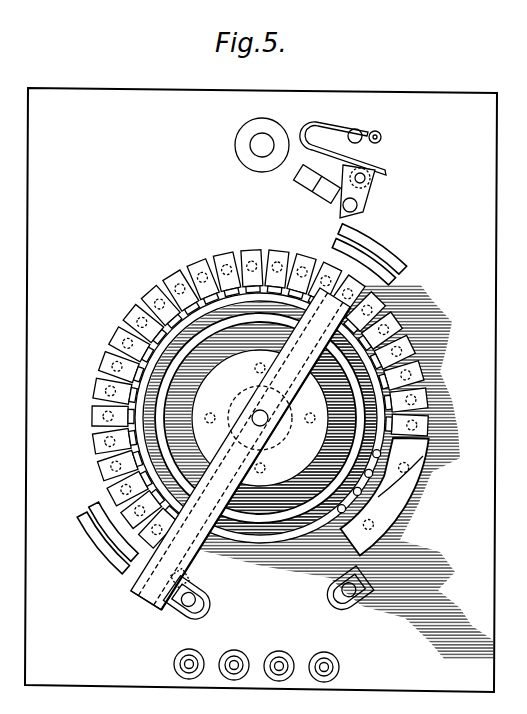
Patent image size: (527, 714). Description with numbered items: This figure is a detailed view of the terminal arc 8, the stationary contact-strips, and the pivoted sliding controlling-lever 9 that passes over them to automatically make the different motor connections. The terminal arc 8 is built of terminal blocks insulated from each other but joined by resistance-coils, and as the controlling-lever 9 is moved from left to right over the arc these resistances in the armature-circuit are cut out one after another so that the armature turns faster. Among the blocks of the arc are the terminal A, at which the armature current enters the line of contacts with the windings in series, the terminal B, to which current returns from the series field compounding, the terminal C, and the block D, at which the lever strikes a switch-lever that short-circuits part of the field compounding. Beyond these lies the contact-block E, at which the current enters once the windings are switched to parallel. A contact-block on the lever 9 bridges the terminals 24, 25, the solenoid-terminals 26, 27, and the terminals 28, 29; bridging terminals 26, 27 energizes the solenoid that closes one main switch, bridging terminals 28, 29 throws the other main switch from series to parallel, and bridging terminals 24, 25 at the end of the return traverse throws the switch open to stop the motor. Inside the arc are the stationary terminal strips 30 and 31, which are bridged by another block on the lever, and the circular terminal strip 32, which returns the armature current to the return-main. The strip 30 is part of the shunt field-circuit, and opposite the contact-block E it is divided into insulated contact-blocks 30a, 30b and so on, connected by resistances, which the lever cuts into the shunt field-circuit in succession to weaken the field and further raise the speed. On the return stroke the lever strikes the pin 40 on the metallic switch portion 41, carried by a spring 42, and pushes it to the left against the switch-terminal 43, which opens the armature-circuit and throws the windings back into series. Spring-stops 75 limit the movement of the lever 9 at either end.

The terminal arc 8 is at (93, 439).
The controlling-lever 9 is at (241, 466).
The terminal 24 is at (182, 580).
The terminal 25 is at (159, 612).
The solenoid-terminal 26 is at (80, 518).
The solenoid-terminal 27 is at (112, 494).
The terminal 28 is at (397, 288).
The terminal 29 is at (406, 268).
The stationary terminal strip 30 is at (106, 468).
The contact-block 30a is at (427, 452).
The contact-block 30b is at (378, 497).
The stationary terminal strip 31 is at (277, 528).
The circular terminal strip 32 is at (260, 418).
The pin 40 is at (376, 194).
The metallic switch portion 41 is at (380, 181).
The spring 42 is at (316, 125).
The switch-terminal 43 is at (300, 191).
The spring-stops 75 is at (210, 604).
The terminal A is at (283, 258).
The terminal B is at (206, 268).
The terminal C is at (324, 268).
The block D is at (172, 282).
The contact-block E is at (414, 497).